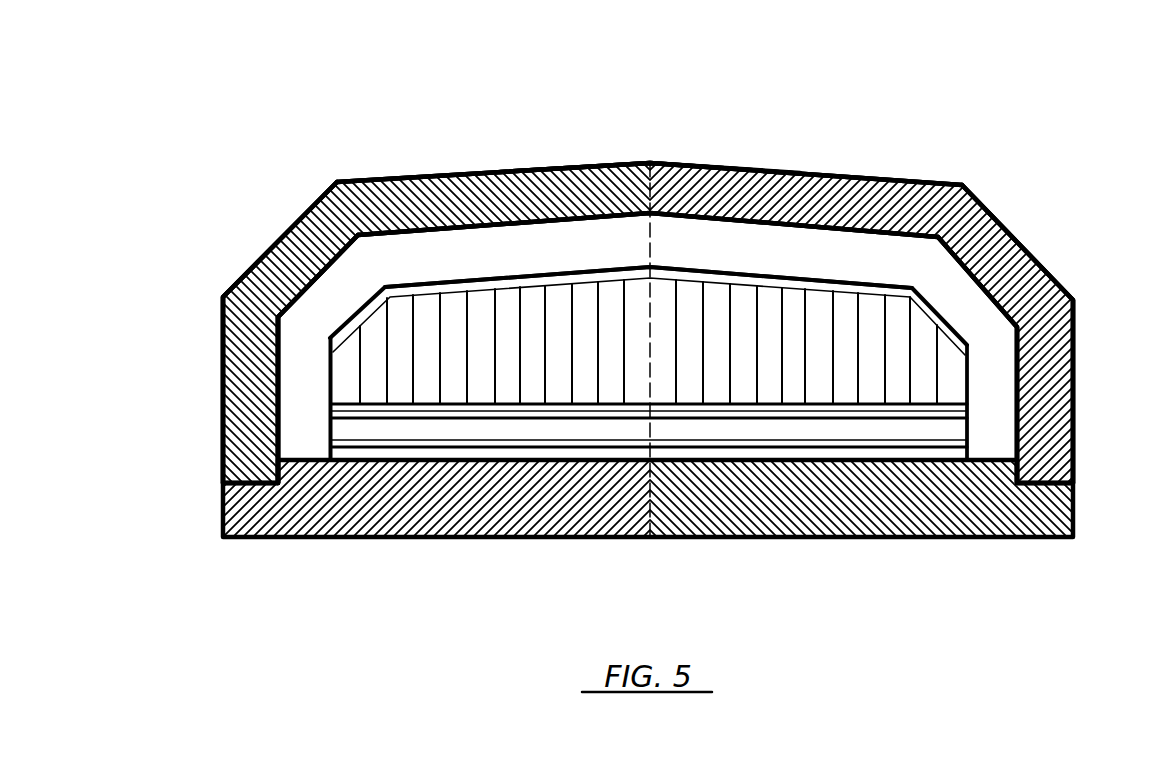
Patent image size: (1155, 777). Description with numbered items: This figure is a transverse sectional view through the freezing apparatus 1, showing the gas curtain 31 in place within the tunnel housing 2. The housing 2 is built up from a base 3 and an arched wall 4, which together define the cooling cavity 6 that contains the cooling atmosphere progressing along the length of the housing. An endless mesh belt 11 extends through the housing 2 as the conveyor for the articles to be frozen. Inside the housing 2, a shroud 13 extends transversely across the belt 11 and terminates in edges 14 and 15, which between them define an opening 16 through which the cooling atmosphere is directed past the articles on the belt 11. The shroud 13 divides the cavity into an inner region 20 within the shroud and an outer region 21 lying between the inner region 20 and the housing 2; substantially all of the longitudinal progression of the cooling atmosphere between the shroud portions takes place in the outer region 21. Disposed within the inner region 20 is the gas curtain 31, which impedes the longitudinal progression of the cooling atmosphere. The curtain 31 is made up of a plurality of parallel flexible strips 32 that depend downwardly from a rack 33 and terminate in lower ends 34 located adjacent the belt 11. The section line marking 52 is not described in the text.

The freezing apparatus 1 is at (848, 88).
The tunnel housing 2 is at (995, 137).
The base 3 is at (295, 510).
The arched wall 4 is at (292, 252).
The cooling cavity 6 is at (305, 385).
The endless mesh belt 11 is at (478, 420).
The shroud 13 is at (987, 210).
The edge 14 is at (333, 415).
The edge 15 is at (968, 417).
The opening 16 is at (717, 433).
The inner region 20 is at (720, 317).
The outer region 21 is at (693, 238).
The gas curtain 31 is at (530, 325).
The flexible strips 32 is at (425, 313).
The rack 33 is at (813, 287).
The lower ends 34 is at (399, 398).
The outer top surface 52 is at (578, 118).